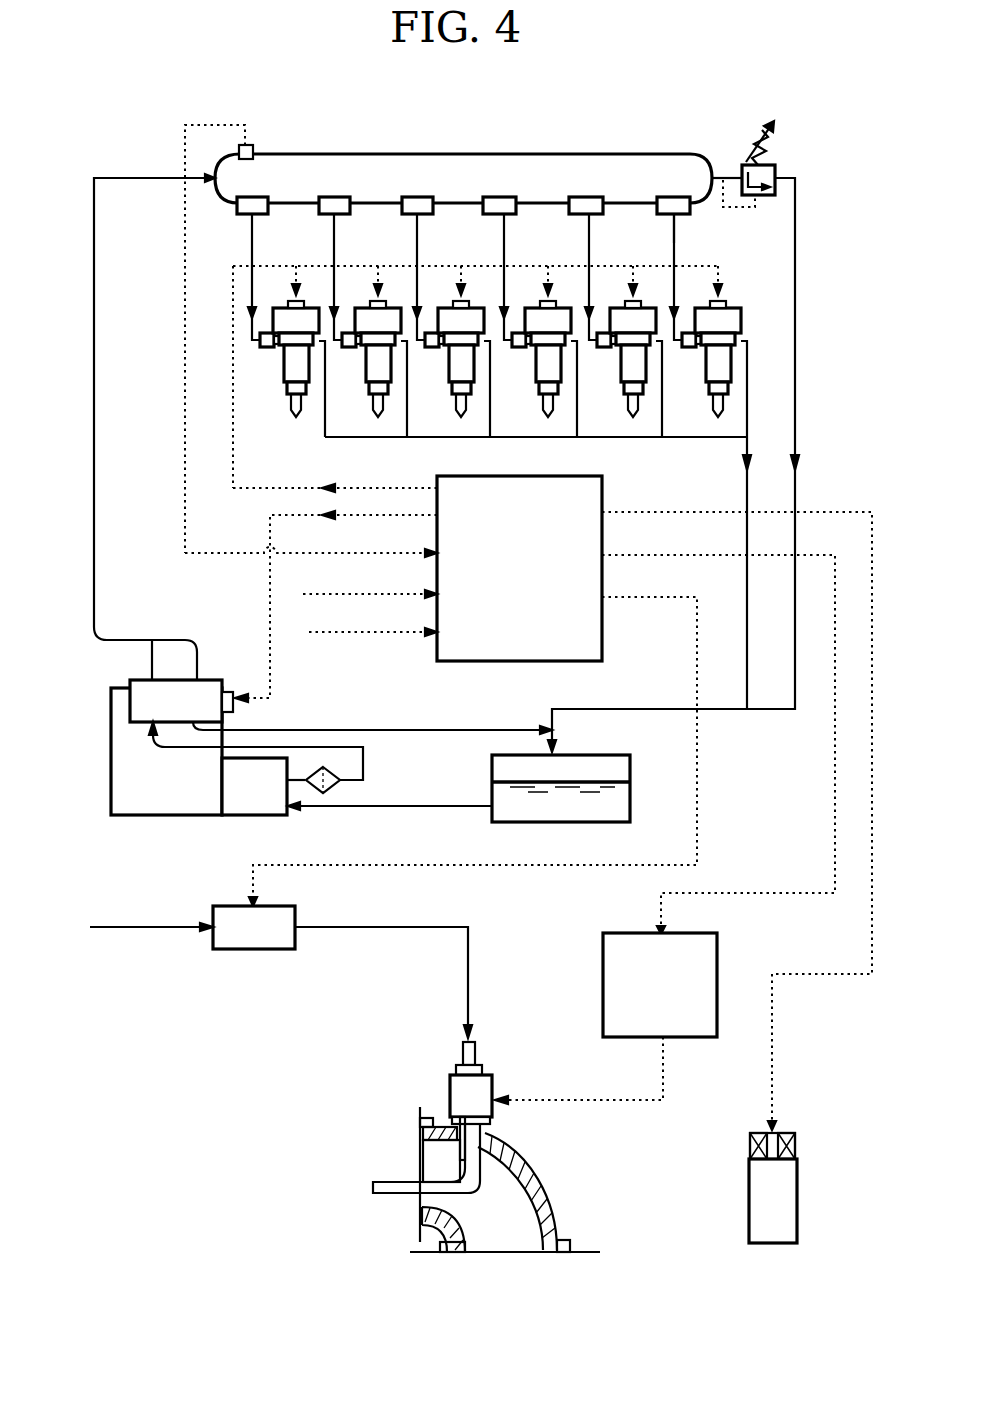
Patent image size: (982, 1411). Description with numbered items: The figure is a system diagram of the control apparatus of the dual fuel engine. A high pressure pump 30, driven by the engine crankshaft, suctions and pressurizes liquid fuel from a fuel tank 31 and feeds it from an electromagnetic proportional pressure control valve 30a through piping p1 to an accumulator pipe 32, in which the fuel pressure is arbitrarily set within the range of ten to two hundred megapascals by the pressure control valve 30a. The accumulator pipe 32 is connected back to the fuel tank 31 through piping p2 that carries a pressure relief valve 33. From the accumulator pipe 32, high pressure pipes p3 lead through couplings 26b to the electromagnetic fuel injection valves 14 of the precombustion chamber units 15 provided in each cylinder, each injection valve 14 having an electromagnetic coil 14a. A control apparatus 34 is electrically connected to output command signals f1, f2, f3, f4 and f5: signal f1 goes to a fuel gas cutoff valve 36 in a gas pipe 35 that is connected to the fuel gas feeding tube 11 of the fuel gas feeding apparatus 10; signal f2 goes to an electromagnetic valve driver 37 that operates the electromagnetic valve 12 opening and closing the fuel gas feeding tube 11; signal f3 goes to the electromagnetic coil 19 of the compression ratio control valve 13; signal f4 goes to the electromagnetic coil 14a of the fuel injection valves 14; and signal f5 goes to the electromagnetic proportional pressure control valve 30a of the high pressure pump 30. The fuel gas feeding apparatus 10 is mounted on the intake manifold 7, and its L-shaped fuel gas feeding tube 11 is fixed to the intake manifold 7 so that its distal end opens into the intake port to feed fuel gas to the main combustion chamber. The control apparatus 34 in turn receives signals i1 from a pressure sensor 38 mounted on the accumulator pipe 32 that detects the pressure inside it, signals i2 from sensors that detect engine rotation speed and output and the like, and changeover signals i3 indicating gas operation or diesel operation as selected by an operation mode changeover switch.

The accumulator pipe 32 is at (508, 153).
The pressure sensor 38 is at (253, 147).
The pressure relief valve 33 is at (776, 166).
The piping p1 is at (93, 388).
The piping p2 is at (797, 243).
The high pressure pipes p3 is at (674, 243).
The electromagnetic fuel injection valve 14 is at (768, 461).
The electromagnetic coil 14a is at (719, 300).
The precombustion chamber unit 15 is at (748, 320).
The coupling 26b is at (687, 347).
The control apparatus 34 is at (600, 492).
The command signal f4 is at (236, 458).
The command signal f5 is at (270, 652).
The signal i1 is at (235, 553).
The signal i2 is at (382, 594).
The changeover signal i3 is at (378, 632).
The command signal f1 is at (655, 598).
The command signal f2 is at (835, 820).
The command signal f3 is at (848, 975).
The high pressure pump 30 is at (161, 739).
The electromagnetic proportional pressure control valve 30a is at (145, 703).
The fuel tank 31 is at (598, 754).
The fuel gas cutoff valve 36 is at (272, 950).
The gas pipe 35 is at (390, 930).
The electromagnetic valve driver 37 is at (717, 960).
The electromagnetic valve 12 is at (478, 1085).
The fuel gas feeding apparatus 10 is at (425, 1080).
The fuel gas feeding tube 11 is at (398, 1178).
The intake manifold 7 is at (548, 1186).
The electromagnetic coil 19 is at (797, 1145).
The compression ratio control valve 13 is at (797, 1190).